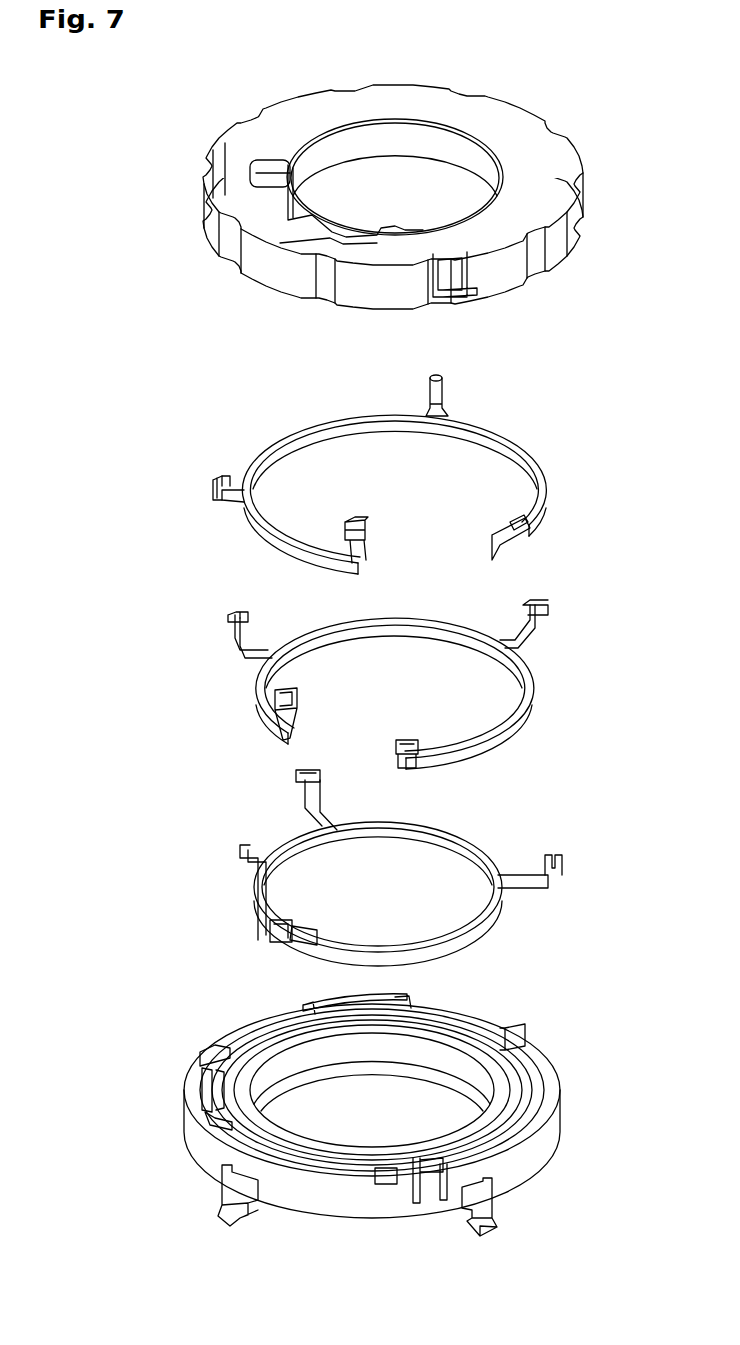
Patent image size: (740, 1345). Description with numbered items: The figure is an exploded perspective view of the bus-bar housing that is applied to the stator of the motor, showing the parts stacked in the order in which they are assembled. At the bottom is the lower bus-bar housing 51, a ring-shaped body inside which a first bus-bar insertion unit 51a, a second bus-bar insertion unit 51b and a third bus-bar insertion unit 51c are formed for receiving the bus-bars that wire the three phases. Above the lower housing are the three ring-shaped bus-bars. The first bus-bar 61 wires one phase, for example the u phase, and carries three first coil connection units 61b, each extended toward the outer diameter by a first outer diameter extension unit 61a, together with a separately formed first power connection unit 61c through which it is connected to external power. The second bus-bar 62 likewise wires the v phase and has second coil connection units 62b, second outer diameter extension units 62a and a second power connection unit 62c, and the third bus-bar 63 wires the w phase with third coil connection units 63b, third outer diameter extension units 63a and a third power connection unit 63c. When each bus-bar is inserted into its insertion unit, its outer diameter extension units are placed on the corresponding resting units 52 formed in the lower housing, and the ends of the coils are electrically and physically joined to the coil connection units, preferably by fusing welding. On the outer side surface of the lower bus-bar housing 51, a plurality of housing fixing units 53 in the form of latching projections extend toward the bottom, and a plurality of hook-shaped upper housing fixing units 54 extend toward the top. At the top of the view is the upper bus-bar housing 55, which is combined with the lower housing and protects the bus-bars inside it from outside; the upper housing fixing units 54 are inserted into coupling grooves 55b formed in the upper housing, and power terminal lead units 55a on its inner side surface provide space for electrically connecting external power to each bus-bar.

The upper bus-bar housing 55 is at (560, 163).
The power terminal lead unit 55a is at (300, 237).
The coupling groove 55b is at (458, 272).
The third bus-bar 63 is at (547, 515).
The third outer diameter extension unit 63a is at (425, 398).
The third coil connection unit 63b is at (447, 383).
The third power connection unit 63c is at (360, 522).
The second bus-bar 62 is at (515, 455).
The second outer diameter extension unit 62a is at (255, 648).
The second coil connection unit 62b is at (226, 628).
The second power connection unit 62c is at (275, 715).
The first bus-bar 61 is at (490, 920).
The first outer diameter extension unit 61a is at (305, 805).
The first coil connection unit 61b is at (292, 778).
The first power connection unit 61c is at (236, 852).
The lower bus-bar housing 51 is at (330, 1205).
The first bus-bar insertion unit 51a is at (200, 1052).
The second bus-bar insertion unit 51b is at (200, 1086).
The third bus-bar insertion unit 51c is at (205, 1120).
The resting unit 52 is at (512, 1030).
The housing fixing unit 53 is at (225, 1190).
The upper housing fixing unit 54 is at (437, 1195).